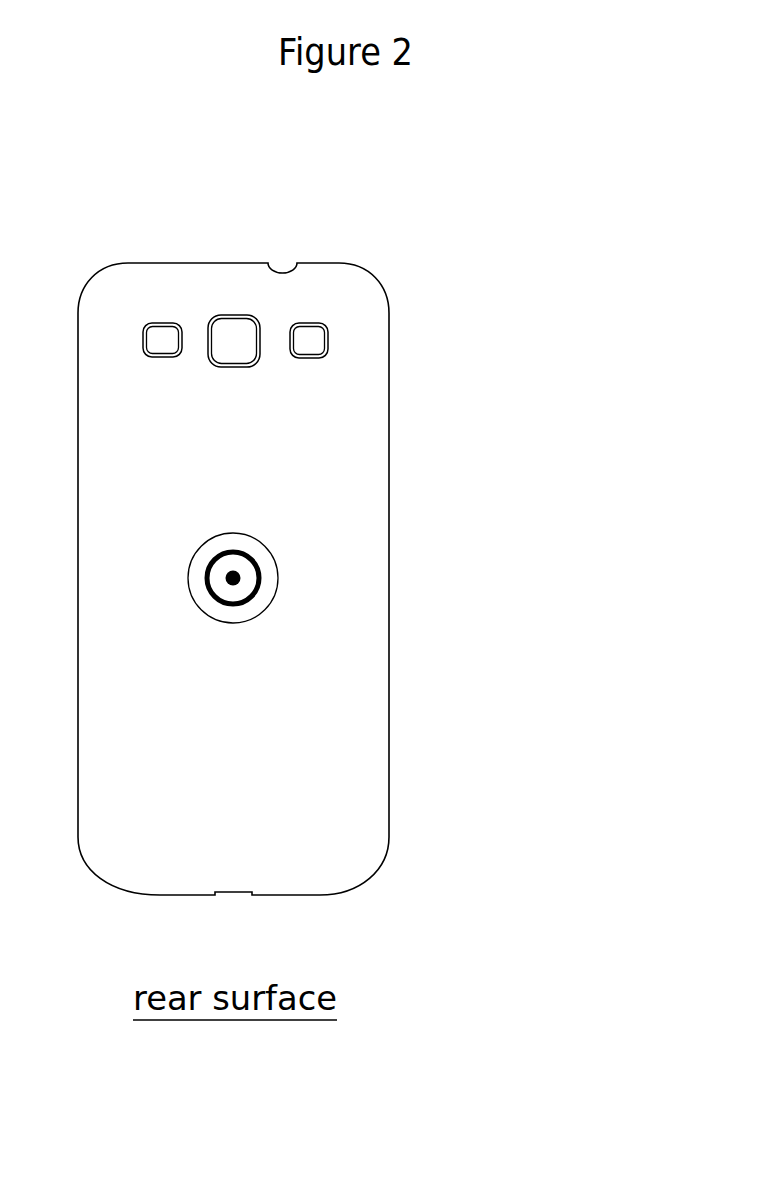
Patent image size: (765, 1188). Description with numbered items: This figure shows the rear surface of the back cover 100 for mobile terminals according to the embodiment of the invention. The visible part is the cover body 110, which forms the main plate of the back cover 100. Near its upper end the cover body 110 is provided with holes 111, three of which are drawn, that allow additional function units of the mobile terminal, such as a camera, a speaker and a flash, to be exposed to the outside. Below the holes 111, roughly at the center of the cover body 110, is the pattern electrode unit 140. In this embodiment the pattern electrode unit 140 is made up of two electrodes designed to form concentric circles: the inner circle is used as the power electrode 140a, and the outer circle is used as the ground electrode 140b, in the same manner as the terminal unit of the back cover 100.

The back cover 100 is at (372, 203).
The cover body 110 is at (388, 305).
The holes 111 is at (307, 338).
The pattern electrode unit 140 is at (562, 520).
The power electrode 140a is at (240, 573).
The ground electrode 140b is at (261, 578).